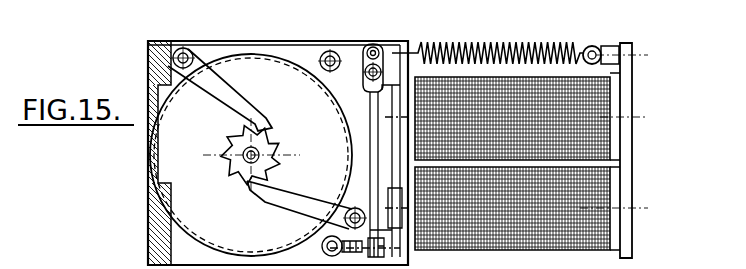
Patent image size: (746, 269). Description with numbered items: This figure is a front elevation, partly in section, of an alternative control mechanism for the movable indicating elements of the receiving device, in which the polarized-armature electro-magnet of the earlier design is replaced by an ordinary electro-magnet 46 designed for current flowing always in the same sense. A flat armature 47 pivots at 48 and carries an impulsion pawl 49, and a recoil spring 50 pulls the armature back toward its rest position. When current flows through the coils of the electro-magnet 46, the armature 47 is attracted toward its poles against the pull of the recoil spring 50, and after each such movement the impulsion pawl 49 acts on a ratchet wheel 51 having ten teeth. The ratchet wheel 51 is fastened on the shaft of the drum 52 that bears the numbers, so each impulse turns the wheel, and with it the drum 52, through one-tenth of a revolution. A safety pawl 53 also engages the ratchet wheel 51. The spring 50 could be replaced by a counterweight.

The electro-magnet 46 is at (600, 195).
The flat armature 47 is at (359, 160).
The pivot 48 is at (367, 66).
The impulsion pawl 49 is at (284, 197).
The recoil spring 50 is at (493, 47).
The ratchet wheel 51 is at (236, 160).
The drum 52 is at (244, 70).
The safety pawl 53 is at (222, 80).